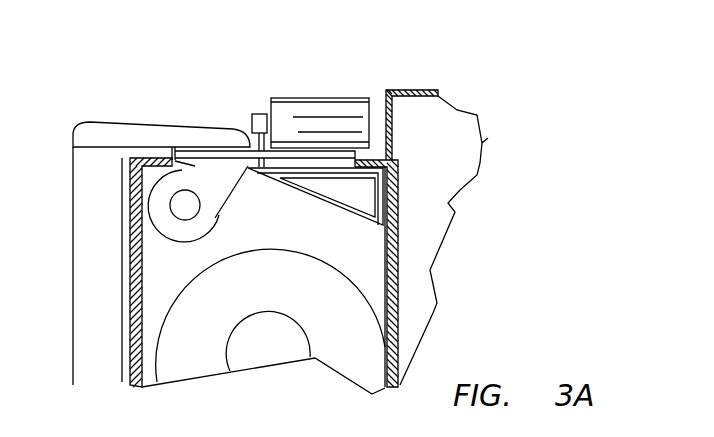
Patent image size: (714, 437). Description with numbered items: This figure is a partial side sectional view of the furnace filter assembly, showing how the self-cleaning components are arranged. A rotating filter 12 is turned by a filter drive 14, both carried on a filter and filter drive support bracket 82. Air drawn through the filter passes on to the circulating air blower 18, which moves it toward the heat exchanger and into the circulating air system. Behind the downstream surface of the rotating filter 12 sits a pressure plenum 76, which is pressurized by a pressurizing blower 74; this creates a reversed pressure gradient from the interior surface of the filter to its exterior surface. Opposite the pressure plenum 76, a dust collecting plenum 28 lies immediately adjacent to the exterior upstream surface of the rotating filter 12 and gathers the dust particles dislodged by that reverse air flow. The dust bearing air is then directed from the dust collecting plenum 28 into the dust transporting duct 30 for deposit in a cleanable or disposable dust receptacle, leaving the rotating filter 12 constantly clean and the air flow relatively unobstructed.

The rotating filter 12 is at (263, 114).
The filter drive 14 is at (300, 120).
The circulating air blower 18 is at (245, 328).
The dust collecting plenum 28 is at (103, 128).
The dust transporting duct 30 is at (93, 260).
The pressurizing blower 74 is at (190, 227).
The pressure plenum 76 is at (218, 172).
The filter and filter drive support bracket 82 is at (383, 205).